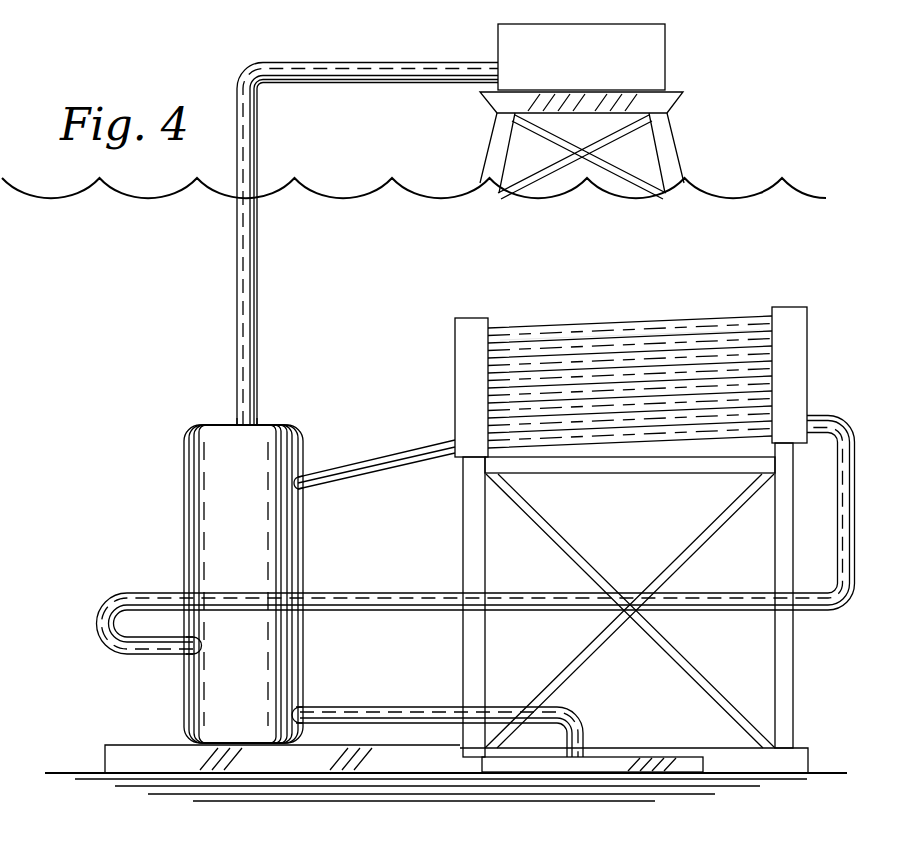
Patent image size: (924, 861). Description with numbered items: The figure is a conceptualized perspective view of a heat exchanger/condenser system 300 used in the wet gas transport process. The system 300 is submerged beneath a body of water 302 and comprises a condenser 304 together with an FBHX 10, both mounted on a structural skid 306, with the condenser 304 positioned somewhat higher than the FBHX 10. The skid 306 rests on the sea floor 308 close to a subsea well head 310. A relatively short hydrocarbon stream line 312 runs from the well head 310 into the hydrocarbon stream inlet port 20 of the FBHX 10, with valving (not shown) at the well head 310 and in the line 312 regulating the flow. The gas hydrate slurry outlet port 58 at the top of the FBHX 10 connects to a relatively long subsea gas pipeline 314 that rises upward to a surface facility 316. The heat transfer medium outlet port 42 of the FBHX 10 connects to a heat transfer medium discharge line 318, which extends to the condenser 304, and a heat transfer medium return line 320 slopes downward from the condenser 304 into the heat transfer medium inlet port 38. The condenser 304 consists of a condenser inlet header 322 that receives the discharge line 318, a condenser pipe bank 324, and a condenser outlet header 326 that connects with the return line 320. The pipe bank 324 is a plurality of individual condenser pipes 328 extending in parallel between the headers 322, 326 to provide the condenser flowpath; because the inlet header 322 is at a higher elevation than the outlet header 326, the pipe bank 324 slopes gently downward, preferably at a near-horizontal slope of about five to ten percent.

The FBHX 10 is at (254, 549).
The hydrocarbon stream inlet port 20 is at (315, 700).
The heat transfer medium inlet port 38 is at (305, 490).
The heat transfer medium outlet port 42 is at (193, 648).
The gas hydrate slurry outlet port 58 is at (240, 422).
The heat exchanger/condenser system 300 is at (200, 340).
The body of water 302 is at (358, 266).
The condenser 304 is at (686, 485).
The structural skid 306 is at (155, 755).
The sea floor 308 is at (833, 775).
The subsea well head 310 is at (613, 748).
The hydrocarbon stream line 312 is at (362, 712).
The subsea gas pipeline 314 is at (250, 360).
The surface facility 316 is at (606, 72).
The heat transfer medium discharge line 318 is at (367, 600).
The heat transfer medium return line 320 is at (360, 462).
The condenser inlet header 322 is at (792, 318).
The condenser pipe bank 324 is at (551, 327).
The condenser outlet header 326 is at (470, 328).
The condenser pipes 328 is at (718, 377).